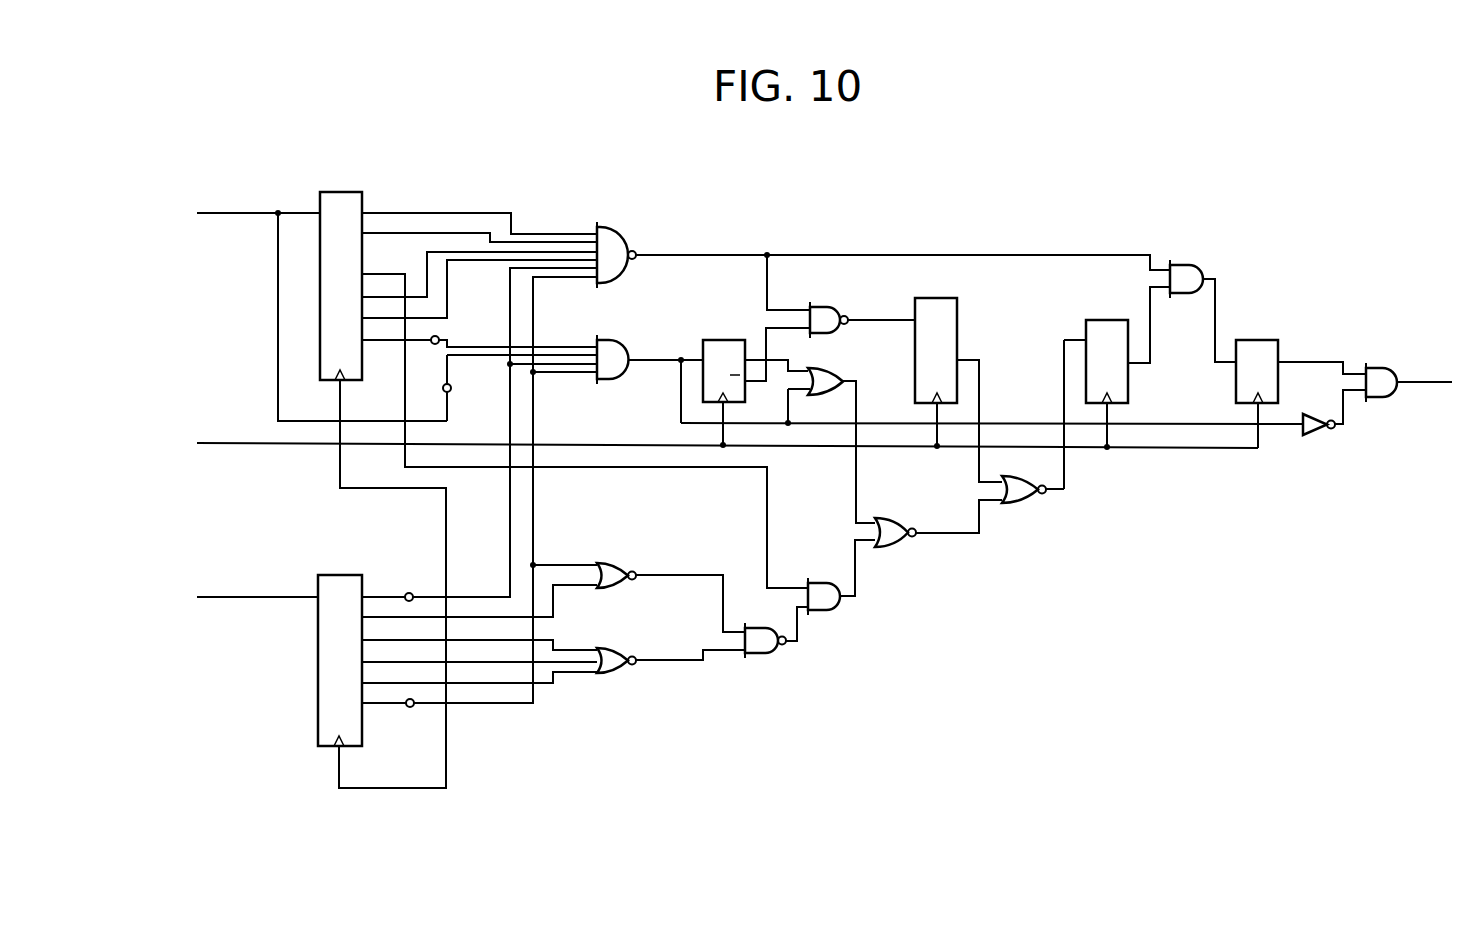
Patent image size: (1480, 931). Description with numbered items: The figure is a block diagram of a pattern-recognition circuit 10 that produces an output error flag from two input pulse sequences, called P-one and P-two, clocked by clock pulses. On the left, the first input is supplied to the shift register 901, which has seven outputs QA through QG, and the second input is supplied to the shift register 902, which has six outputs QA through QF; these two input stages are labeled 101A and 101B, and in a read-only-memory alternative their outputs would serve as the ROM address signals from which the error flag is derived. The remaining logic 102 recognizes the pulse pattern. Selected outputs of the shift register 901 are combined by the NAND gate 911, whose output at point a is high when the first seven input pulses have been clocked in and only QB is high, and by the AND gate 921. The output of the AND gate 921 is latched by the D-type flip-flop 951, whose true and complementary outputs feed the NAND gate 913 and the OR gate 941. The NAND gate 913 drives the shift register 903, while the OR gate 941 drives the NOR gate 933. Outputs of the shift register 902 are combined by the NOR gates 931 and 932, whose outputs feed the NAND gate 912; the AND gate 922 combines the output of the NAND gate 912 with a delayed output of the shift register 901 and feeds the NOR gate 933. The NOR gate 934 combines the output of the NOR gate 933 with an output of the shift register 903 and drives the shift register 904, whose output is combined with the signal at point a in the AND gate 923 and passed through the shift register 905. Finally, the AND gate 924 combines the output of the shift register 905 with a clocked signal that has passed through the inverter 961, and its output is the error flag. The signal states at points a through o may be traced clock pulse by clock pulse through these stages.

The error detecting circuit 10 is at (863, 722).
The comparison logic circuit 102 is at (900, 224).
The shift register 101A is at (366, 192).
The shift register 101B is at (346, 575).
The shift register 901 is at (336, 192).
The shift register 902 is at (326, 575).
The shift register 903 is at (937, 298).
The shift register 904 is at (1100, 320).
The shift register 905 is at (1256, 340).
The NAND gate 911 is at (609, 227).
The NAND gate 912 is at (752, 653).
The NAND gate 913 is at (817, 307).
The AND gate 921 is at (609, 340).
The AND gate 922 is at (815, 583).
The AND gate 923 is at (1187, 265).
The AND gate 924 is at (1373, 368).
The NOR gate 931 is at (604, 563).
The NOR gate 932 is at (604, 674).
The NOR gate 933 is at (887, 518).
The NOR gate 934 is at (1016, 503).
The OR gate 941 is at (831, 369).
The D-type flip-flop 951 is at (716, 340).
The inverter 961 is at (1318, 436).